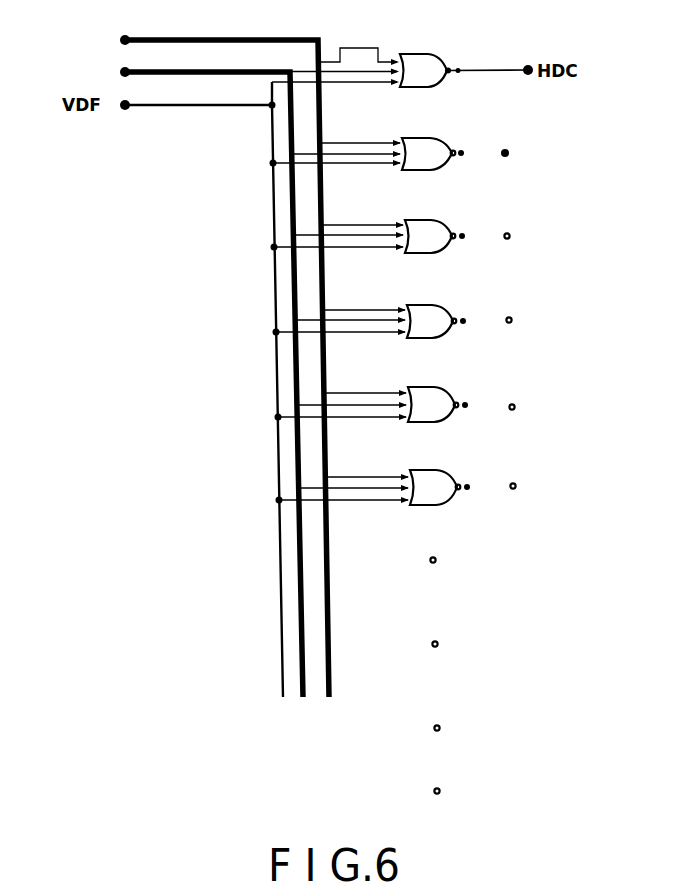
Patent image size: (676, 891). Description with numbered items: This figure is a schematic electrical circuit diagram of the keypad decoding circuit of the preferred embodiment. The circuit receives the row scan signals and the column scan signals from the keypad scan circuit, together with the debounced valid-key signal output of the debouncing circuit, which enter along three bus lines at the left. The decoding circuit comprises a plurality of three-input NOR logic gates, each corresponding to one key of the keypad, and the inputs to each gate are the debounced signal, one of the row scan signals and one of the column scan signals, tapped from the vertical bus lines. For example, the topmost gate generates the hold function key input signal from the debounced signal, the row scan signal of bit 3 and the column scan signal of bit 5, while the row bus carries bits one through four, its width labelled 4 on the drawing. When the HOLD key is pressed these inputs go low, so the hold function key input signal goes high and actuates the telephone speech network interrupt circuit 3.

The telephone speech network interrupt circuit 3 is at (358, 47).
The RL 1:4 row line bus 4 is at (185, 364).
The CL 1:5 column line bus 5 is at (218, 376).